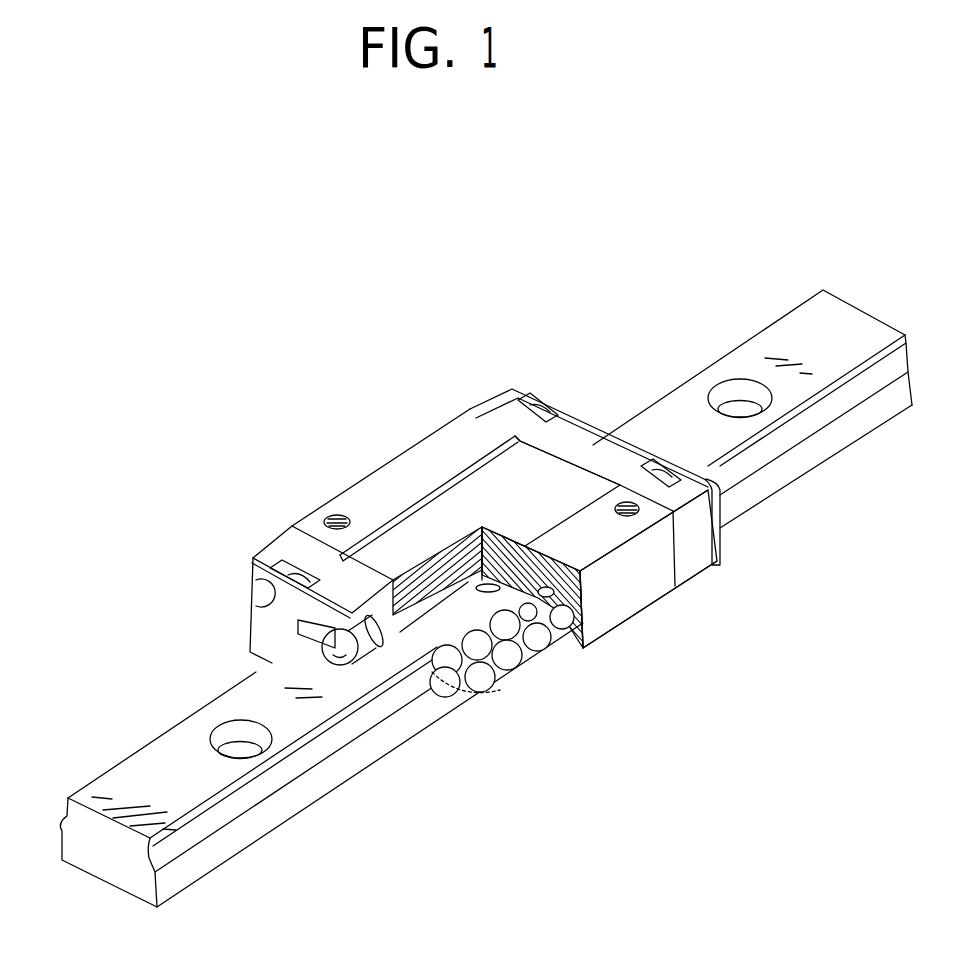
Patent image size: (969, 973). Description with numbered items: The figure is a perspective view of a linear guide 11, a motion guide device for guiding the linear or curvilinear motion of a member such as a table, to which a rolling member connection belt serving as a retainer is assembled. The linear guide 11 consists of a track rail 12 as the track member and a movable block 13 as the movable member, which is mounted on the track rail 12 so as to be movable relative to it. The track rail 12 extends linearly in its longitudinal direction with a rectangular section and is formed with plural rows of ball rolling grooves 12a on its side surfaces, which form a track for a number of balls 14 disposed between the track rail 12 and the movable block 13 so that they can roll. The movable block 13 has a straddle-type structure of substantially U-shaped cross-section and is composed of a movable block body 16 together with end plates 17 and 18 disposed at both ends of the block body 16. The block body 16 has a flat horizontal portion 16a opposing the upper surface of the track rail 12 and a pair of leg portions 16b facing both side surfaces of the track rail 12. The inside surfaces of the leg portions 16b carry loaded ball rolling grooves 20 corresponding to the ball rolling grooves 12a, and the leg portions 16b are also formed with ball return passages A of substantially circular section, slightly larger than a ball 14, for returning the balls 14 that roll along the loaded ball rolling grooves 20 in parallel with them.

The linear guide 11 is at (469, 360).
The track rail 12 is at (168, 757).
The ball rolling grooves 12a is at (66, 822).
The movable block 13 is at (385, 445).
The balls 14 is at (510, 664).
The movable block body 16 is at (437, 447).
The flat horizontal portion 16a is at (556, 470).
The leg portions 16b is at (655, 580).
The end plate 17 is at (286, 545).
The end plate 18 is at (514, 392).
The loaded ball rolling grooves 20 is at (543, 585).
The ball return passage A is at (564, 650).